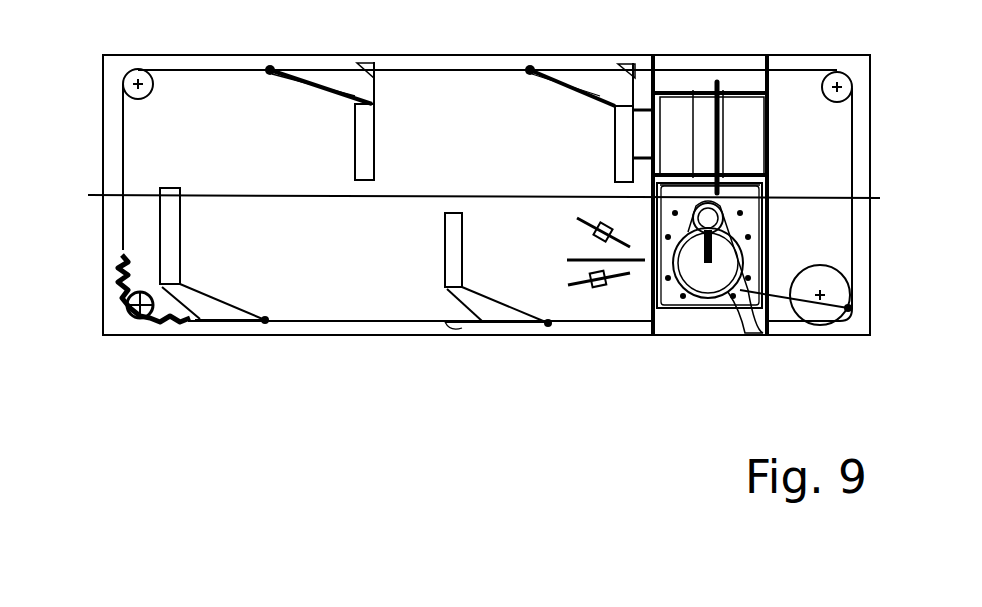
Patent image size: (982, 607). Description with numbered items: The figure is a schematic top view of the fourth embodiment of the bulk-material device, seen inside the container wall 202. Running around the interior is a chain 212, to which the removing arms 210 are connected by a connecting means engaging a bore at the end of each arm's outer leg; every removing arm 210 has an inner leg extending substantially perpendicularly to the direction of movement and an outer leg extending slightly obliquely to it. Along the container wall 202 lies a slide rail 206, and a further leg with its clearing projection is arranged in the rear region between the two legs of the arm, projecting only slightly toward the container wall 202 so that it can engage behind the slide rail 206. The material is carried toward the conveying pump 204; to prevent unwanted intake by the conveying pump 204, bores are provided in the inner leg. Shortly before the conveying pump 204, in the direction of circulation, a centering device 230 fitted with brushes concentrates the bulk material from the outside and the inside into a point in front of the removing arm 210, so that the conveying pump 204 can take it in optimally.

The container wall 202 is at (103, 134).
The conveying pump 204 is at (718, 278).
The slide rail 206 is at (342, 321).
The removing arm 210 is at (360, 83).
The chain 212 is at (121, 248).
The centering device 230 is at (602, 305).